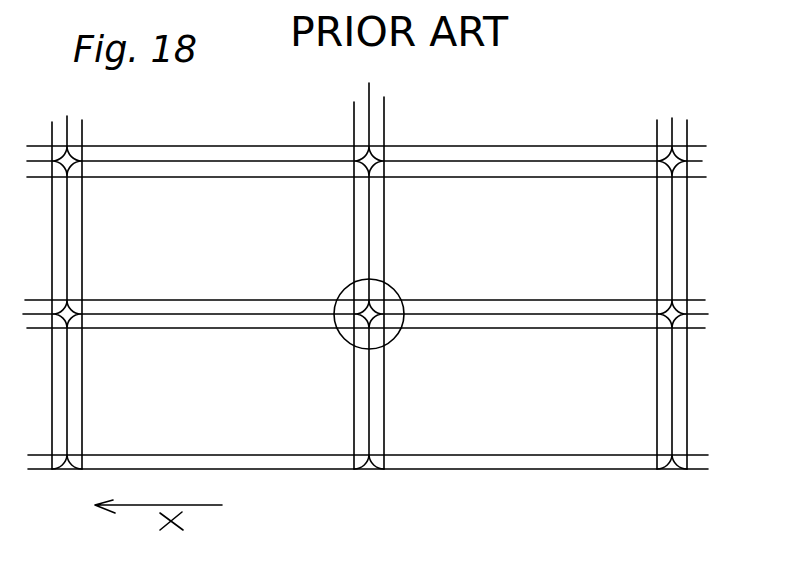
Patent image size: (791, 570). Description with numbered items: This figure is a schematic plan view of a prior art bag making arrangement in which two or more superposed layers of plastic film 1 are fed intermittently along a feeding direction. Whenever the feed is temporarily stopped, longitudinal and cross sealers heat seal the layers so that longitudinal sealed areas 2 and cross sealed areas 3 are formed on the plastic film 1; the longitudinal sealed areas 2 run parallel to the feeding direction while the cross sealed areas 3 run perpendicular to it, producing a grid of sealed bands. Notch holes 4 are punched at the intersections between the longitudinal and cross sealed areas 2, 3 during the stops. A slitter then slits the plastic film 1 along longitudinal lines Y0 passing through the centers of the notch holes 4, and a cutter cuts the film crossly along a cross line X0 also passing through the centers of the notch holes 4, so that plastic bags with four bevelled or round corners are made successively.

The plastic film 1 is at (590, 443).
The longitudinal sealed areas 2 is at (570, 303).
The cross sealed areas 3 is at (380, 420).
The notch holes 4 is at (362, 318).
The cross line X0 is at (369, 386).
The longitudinal lines Y0 is at (477, 313).